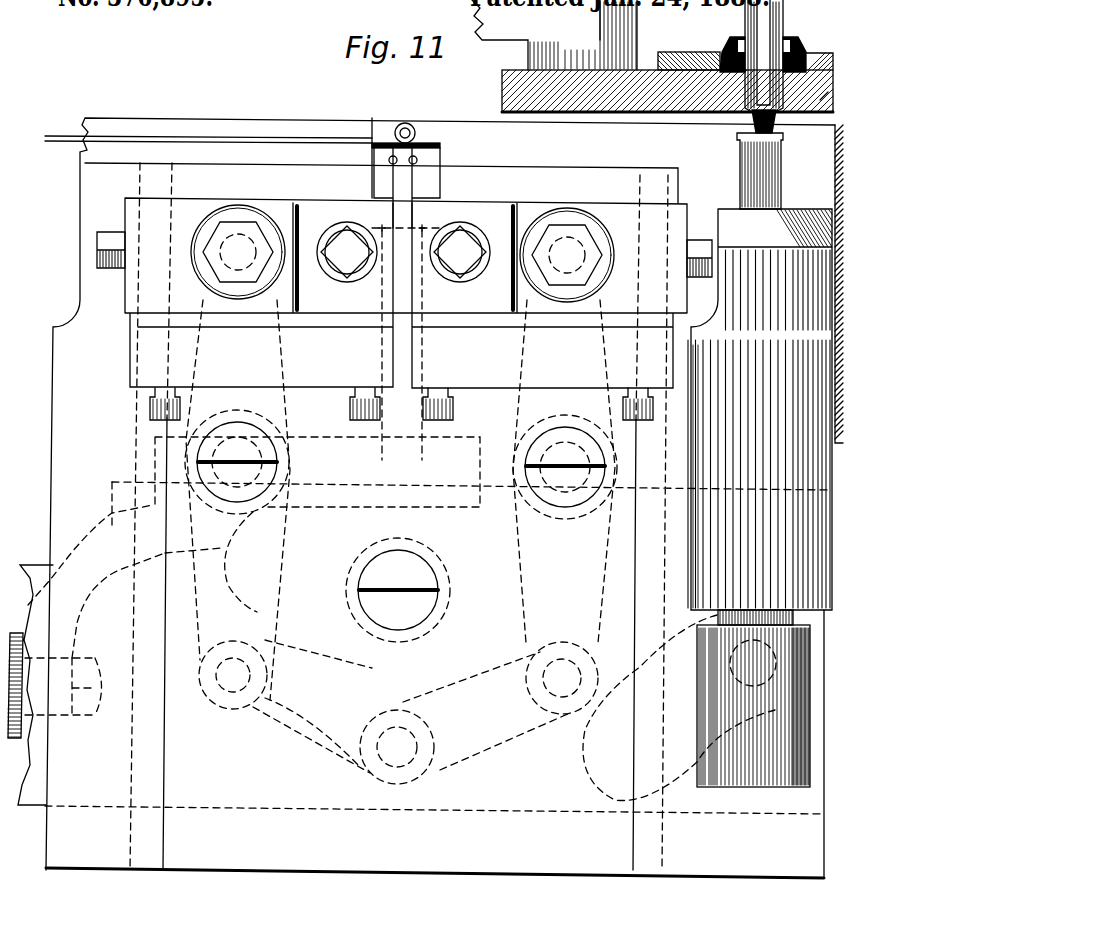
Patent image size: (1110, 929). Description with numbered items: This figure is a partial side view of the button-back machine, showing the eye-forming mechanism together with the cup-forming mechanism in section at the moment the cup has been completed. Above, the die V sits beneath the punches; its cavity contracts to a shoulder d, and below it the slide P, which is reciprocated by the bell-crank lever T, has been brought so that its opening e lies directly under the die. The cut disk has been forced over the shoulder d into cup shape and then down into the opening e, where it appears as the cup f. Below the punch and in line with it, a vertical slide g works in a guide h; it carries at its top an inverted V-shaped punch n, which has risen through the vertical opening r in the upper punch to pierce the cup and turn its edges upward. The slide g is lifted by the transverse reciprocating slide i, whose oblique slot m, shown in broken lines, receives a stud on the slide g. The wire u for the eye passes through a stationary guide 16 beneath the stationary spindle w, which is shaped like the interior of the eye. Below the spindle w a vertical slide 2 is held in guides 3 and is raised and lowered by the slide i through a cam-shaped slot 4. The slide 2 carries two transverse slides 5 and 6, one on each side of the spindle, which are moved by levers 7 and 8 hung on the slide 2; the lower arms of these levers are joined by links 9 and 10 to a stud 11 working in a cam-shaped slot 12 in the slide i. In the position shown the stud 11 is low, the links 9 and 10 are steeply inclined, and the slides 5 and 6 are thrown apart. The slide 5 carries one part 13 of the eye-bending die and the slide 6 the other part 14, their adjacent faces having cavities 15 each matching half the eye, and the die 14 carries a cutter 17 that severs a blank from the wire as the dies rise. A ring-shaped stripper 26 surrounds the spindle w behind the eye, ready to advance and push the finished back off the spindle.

The vertical slide 2 is at (241, 647).
The guides 3 is at (444, 498).
The cam-shaped slot 4 is at (398, 583).
The transverse slide 5 is at (567, 261).
The transverse slide 6 is at (238, 260).
The lever 7 is at (565, 471).
The lever 8 is at (227, 500).
The link 9 is at (500, 706).
The link 10 is at (311, 733).
The stud 11 is at (397, 747).
The cam-shaped slot 12 is at (285, 674).
The eye-bending die part 13 is at (426, 188).
The eye-bending die part 14 is at (383, 188).
The cavities 15 is at (404, 162).
The stationary guide 16 is at (403, 200).
The cutter 17 is at (374, 142).
The ring-shaped stripper 26 is at (417, 131).
The wire u is at (208, 131).
The spindle w is at (411, 126).
The die v is at (722, 46).
The bell-crank lever T is at (794, 42).
The slide P is at (652, 56).
The shoulder d is at (811, 61).
The opening e is at (818, 91).
The cup f is at (806, 110).
The vertical opening r is at (764, 57).
The punch n is at (752, 117).
The vertical slide g is at (760, 171).
The guide h is at (760, 417).
The oblique slot m is at (696, 708).
The transverse reciprocating slide i is at (55, 685).